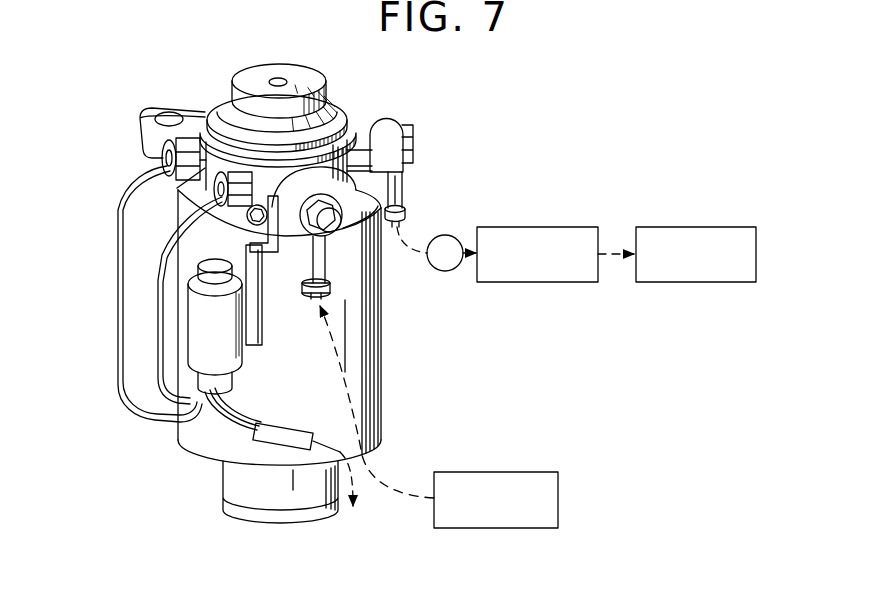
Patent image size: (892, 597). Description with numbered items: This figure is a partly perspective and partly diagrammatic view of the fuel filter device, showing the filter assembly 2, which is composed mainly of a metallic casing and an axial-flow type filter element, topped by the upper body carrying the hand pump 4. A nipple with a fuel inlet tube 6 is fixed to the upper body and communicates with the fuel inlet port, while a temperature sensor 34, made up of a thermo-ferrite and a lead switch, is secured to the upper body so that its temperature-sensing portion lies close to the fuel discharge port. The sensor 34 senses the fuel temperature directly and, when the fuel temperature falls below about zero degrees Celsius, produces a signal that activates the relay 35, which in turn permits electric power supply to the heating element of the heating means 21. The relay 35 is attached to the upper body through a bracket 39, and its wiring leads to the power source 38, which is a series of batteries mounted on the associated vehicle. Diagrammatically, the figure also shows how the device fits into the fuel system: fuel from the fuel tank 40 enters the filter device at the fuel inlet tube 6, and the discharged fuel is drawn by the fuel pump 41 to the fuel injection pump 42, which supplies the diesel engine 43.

The filter assembly 2 is at (390, 332).
The hand pump 4 is at (345, 102).
The fuel inlet tube 6 is at (324, 256).
The heating means 21 is at (188, 207).
The temperature sensor 34 is at (146, 160).
The relay 35 is at (237, 353).
The power source 38 is at (411, 509).
The bracket 39 is at (252, 244).
The fuel tank 40 is at (512, 472).
The fuel pump 41 is at (440, 235).
The fuel injection pump 42 is at (572, 228).
The diesel engine 43 is at (693, 228).